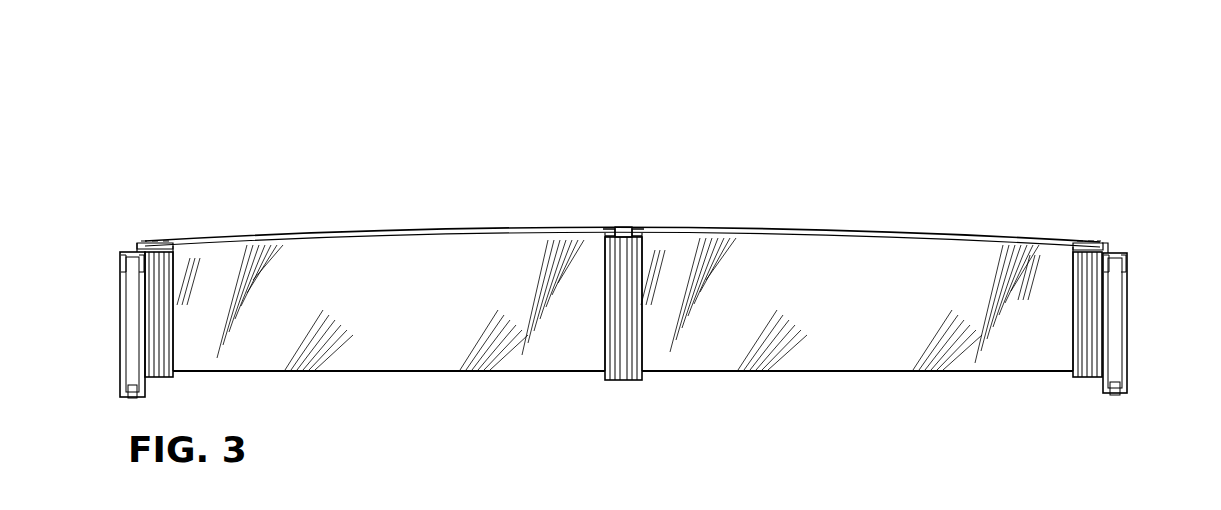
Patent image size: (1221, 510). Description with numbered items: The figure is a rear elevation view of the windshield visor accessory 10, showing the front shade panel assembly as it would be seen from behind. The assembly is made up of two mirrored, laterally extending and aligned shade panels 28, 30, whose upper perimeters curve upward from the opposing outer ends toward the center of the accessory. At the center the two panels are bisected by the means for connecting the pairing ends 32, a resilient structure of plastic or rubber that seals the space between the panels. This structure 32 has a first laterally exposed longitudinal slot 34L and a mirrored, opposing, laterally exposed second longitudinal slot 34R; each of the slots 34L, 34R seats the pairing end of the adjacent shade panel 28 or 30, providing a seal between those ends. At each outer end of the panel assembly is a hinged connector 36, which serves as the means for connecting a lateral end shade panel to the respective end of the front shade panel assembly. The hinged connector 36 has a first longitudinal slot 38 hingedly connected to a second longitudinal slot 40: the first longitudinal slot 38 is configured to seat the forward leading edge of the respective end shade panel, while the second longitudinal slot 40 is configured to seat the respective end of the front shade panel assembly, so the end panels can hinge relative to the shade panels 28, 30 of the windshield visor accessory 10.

The windshield visor accessory 10 is at (876, 181).
The shade panel 28 is at (740, 229).
The shade panel 30 is at (300, 232).
The means for connecting the pairing ends 32 is at (625, 216).
The second longitudinal slot 34R is at (607, 227).
The first longitudinal slot 34L is at (637, 227).
The hinged connector 36 is at (154, 226).
The first longitudinal slot 38 is at (1085, 241).
The second longitudinal slot 40 is at (1125, 240).